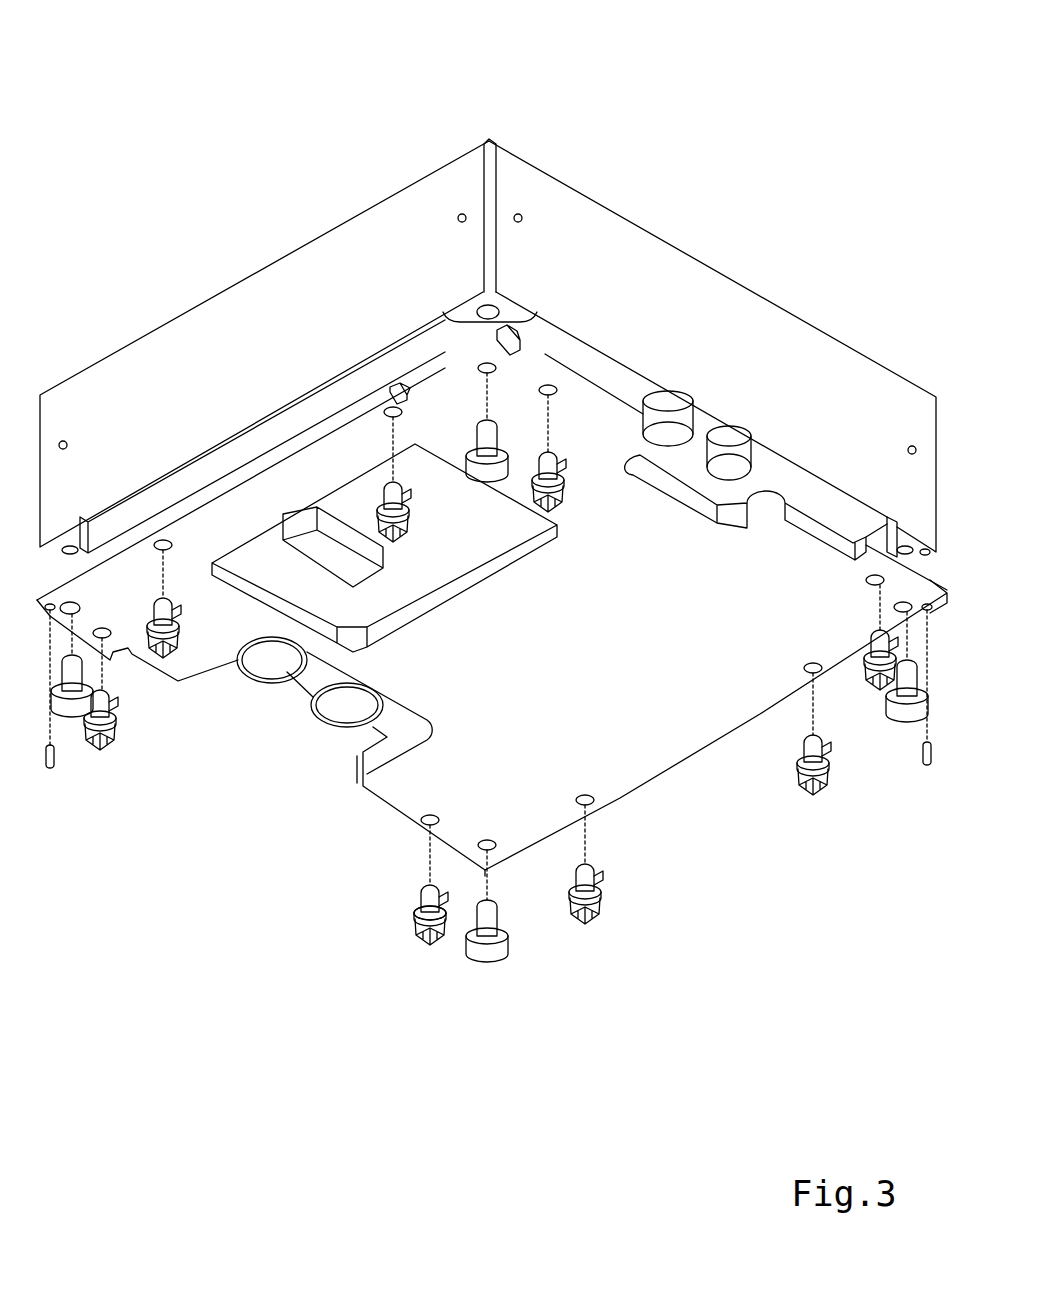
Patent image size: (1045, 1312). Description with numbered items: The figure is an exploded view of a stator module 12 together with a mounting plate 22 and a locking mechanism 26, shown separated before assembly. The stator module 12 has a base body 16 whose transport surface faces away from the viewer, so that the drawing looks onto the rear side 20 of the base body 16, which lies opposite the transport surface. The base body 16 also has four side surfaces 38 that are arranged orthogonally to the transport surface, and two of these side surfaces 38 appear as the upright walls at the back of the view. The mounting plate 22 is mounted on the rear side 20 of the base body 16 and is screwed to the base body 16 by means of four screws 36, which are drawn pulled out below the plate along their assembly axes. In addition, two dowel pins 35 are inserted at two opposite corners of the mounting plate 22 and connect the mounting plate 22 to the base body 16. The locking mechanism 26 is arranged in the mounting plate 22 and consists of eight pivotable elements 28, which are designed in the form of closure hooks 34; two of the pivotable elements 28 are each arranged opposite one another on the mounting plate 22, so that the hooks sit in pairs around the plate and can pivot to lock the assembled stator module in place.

The stator module 12 is at (488, 279).
The base body 16 is at (425, 213).
The rear side 20 is at (297, 403).
The mounting plate 22 is at (668, 677).
The locking mechanism 26 is at (651, 947).
The pivotable elements 28 is at (428, 903).
The closure hooks 34 is at (424, 936).
The dowel pins 35 is at (51, 768).
The screws 36 is at (484, 950).
The side surfaces 38 is at (373, 275).